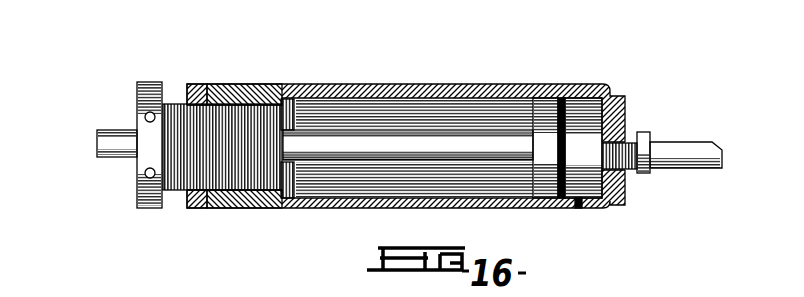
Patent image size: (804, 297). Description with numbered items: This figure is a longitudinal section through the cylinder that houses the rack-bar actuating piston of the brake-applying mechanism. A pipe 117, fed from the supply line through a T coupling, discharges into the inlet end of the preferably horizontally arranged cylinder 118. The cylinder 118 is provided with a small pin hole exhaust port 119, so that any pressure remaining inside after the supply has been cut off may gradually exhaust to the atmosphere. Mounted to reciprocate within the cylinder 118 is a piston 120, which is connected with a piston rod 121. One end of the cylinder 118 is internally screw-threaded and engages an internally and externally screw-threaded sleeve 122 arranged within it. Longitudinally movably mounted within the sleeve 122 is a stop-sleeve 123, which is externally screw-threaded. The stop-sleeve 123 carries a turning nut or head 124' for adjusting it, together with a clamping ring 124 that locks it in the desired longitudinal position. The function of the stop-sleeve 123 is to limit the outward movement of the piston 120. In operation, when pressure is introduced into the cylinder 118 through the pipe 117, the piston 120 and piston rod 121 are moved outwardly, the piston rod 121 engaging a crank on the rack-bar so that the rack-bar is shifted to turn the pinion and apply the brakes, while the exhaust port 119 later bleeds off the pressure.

The pipe 117 is at (688, 170).
The cylinder 118 is at (490, 75).
The pin hole exhaust port 119 is at (579, 208).
The piston 120 is at (552, 140).
The piston rod 121 is at (470, 148).
The sleeve 122 is at (255, 208).
The stop-sleeve 123 is at (180, 190).
The clamping ring 124 is at (196, 130).
The turning nut or head 124' is at (108, 161).